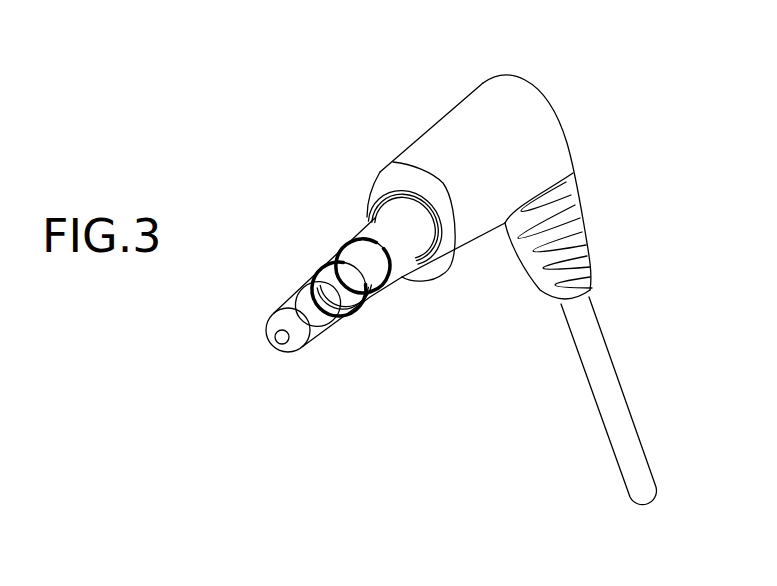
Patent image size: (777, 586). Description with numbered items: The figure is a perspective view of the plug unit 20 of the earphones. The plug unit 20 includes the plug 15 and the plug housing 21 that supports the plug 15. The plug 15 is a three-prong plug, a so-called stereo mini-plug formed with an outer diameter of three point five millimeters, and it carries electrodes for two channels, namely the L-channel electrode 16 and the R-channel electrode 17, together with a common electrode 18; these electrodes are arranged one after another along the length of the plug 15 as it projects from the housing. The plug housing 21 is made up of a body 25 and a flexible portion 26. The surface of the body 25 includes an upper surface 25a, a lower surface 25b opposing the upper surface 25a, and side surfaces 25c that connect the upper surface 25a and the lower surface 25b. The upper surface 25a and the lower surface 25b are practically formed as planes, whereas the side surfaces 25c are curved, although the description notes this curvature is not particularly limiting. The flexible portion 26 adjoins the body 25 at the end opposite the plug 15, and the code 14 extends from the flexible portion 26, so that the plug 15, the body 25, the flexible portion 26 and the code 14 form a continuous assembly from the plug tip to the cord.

The code 14 is at (608, 398).
The plug 15 is at (343, 184).
The L-channel electrode 16 is at (294, 291).
The R-channel electrode 17 is at (338, 245).
The common electrode 18 is at (356, 225).
The plug unit 20 is at (381, 108).
The plug housing 21 is at (530, 82).
The body 25 is at (473, 122).
The upper surface 25a is at (430, 147).
The lower surface 25b is at (407, 285).
The side surfaces 25c is at (369, 205).
The flexible portion 26 is at (588, 199).